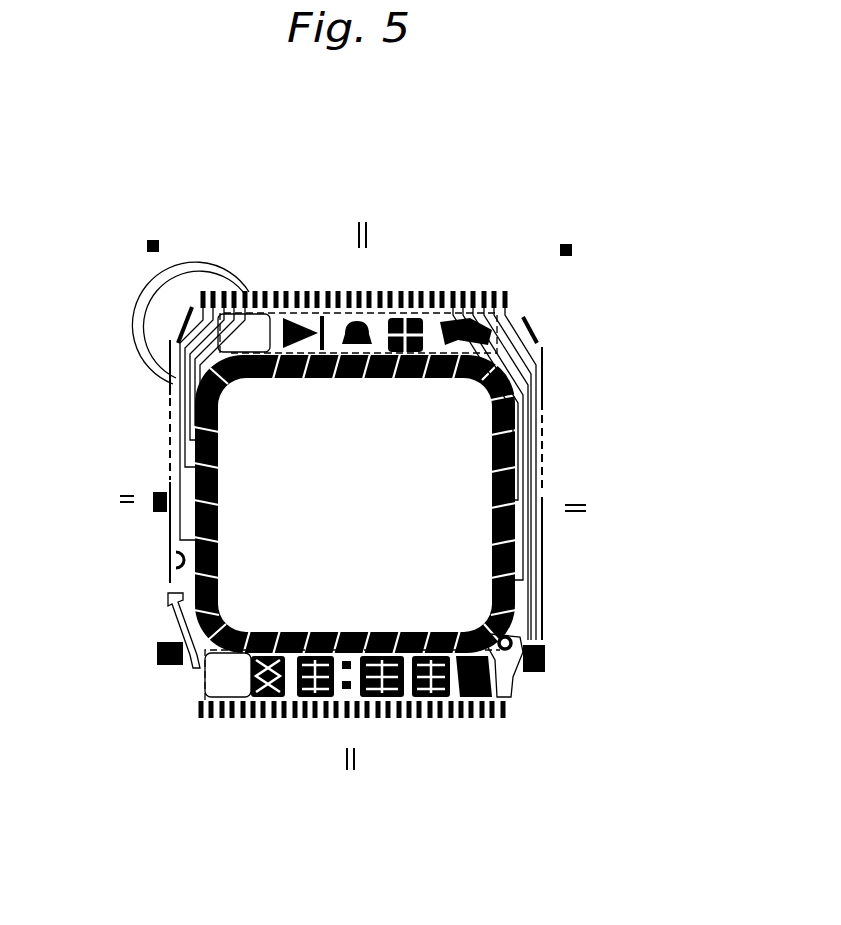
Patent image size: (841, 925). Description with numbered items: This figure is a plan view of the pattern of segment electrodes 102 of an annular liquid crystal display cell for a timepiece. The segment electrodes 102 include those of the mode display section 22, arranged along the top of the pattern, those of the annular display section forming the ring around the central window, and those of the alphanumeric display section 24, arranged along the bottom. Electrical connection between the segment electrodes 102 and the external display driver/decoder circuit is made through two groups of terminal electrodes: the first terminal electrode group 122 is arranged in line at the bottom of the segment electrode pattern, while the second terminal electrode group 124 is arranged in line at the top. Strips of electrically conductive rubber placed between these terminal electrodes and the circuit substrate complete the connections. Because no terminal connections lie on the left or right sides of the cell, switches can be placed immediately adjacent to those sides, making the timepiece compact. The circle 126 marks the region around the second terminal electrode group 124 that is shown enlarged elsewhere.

The mode display section 22 is at (362, 305).
The alphanumeric display section 24 is at (508, 693).
The segment electrodes 102 is at (267, 697).
The first group of terminal electrodes 122 is at (393, 703).
The second group of terminal electrodes 124 is at (432, 300).
The circle 126 is at (150, 338).